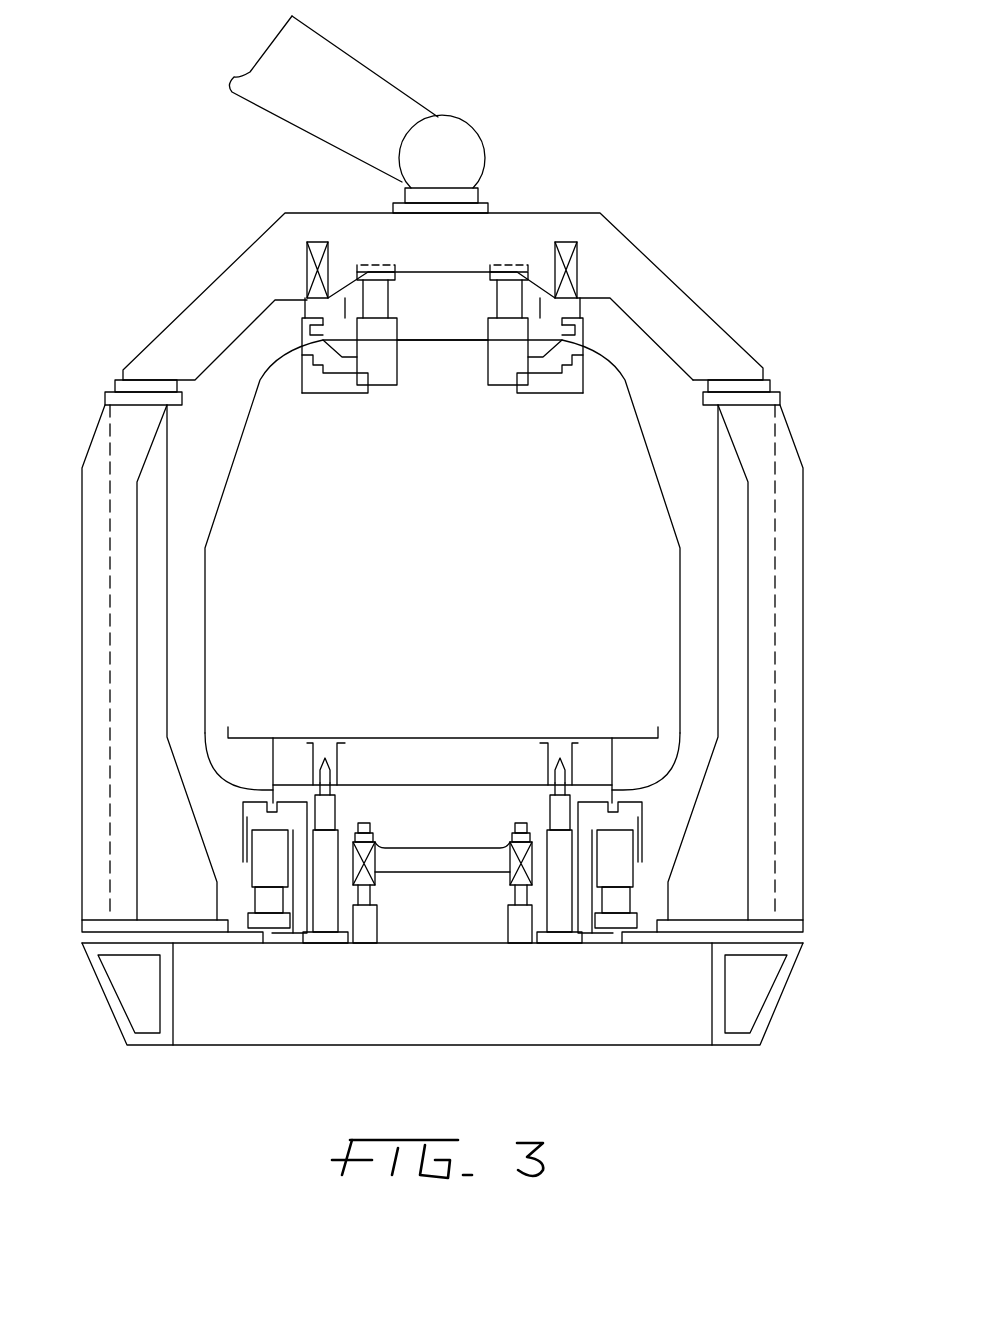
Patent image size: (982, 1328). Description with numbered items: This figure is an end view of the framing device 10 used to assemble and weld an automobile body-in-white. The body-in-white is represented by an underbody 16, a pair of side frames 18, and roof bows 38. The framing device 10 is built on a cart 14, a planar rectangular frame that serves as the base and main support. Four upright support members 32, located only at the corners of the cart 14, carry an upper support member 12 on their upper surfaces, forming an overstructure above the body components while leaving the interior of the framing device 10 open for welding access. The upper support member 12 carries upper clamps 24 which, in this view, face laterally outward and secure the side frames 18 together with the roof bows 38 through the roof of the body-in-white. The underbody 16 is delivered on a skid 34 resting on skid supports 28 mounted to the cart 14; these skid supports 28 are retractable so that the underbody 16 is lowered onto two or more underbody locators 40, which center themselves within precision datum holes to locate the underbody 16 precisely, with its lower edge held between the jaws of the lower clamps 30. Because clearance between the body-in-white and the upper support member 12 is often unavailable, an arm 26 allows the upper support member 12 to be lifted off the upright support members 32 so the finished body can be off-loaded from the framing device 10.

The framing device 10 is at (700, 213).
The upper support member 12 is at (705, 328).
The cart 14 is at (623, 1032).
The underbody 16 is at (450, 738).
The side frames 18 is at (207, 567).
The upper clamps 24 is at (493, 368).
The arm 26 is at (390, 98).
The skid supports 28 is at (517, 932).
The lower clamps 30 is at (262, 868).
The upright support members 32 is at (85, 535).
The skid 34 is at (430, 865).
The roof bows 38 is at (442, 337).
The underbody locators 40 is at (338, 815).